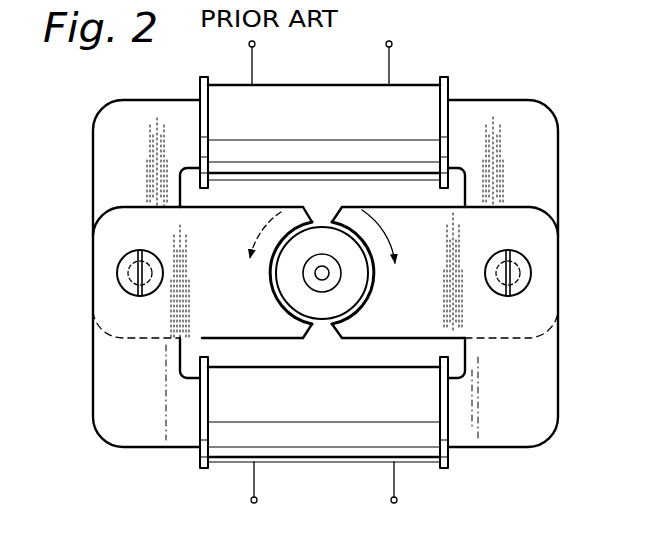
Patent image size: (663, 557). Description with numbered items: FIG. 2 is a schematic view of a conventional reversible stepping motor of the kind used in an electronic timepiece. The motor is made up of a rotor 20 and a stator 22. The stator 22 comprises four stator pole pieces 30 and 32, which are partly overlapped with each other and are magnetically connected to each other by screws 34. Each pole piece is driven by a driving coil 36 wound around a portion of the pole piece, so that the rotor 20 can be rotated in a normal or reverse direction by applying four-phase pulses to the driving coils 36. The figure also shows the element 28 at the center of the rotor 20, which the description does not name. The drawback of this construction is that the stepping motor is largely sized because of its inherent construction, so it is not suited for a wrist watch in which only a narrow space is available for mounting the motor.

The rotor 20 is at (378, 267).
The stator 22 is at (561, 143).
The magnet disk 28 is at (331, 290).
The stator pole piece 30 is at (132, 370).
The stator pole piece 32 is at (137, 188).
The screws 34 is at (130, 272).
The driving coil 36 is at (320, 95).